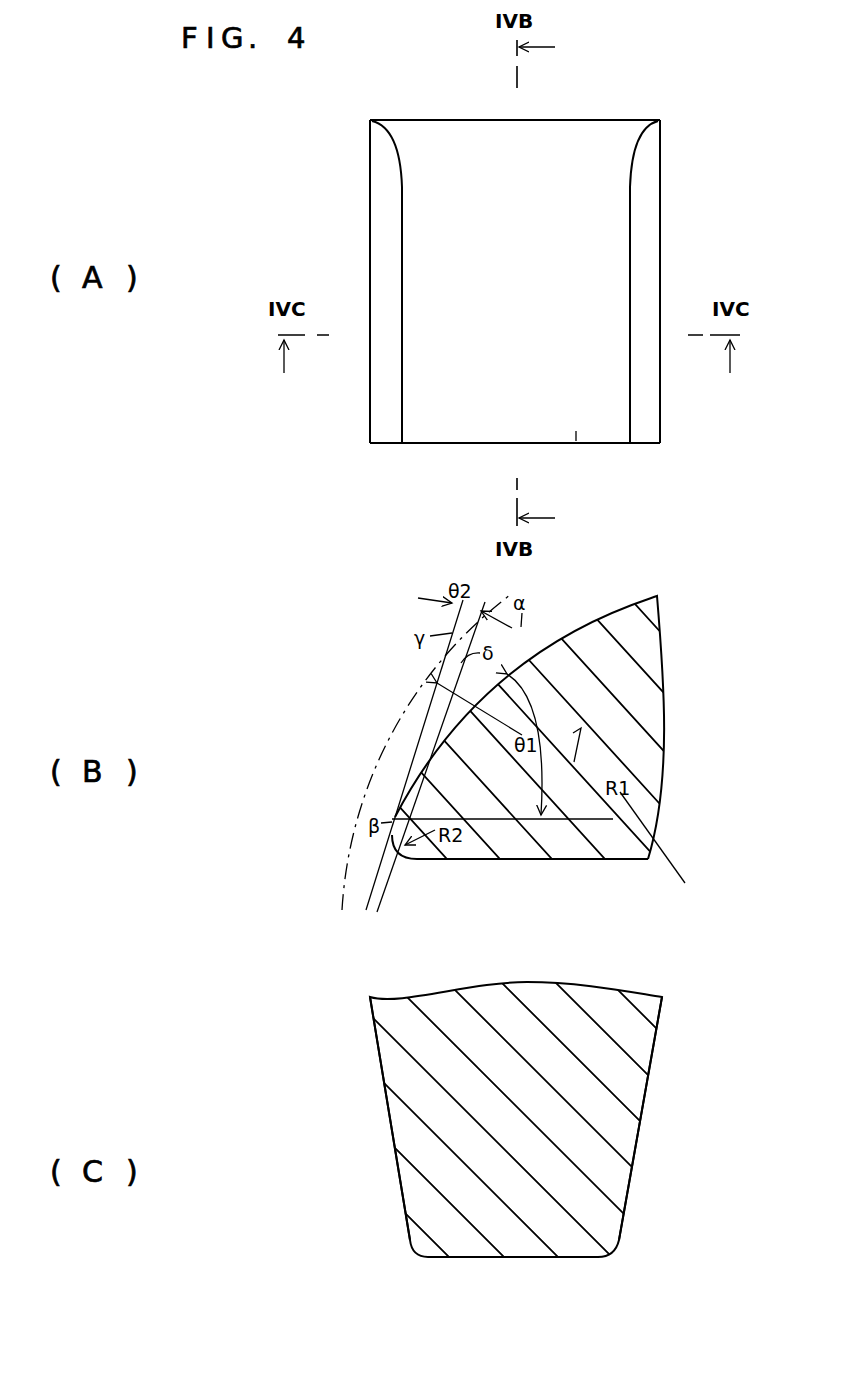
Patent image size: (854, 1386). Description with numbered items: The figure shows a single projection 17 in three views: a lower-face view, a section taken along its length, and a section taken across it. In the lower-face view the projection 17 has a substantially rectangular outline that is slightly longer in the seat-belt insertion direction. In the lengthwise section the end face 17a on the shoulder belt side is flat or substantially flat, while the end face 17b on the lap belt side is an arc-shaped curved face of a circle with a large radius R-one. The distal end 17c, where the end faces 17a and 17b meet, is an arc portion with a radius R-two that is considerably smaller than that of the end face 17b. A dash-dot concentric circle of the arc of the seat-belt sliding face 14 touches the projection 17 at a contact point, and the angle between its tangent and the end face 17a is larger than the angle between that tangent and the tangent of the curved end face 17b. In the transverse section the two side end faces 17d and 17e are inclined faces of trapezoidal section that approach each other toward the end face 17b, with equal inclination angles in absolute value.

The projection 17 is at (344, 403).
The end face on the shoulder belt side 17a is at (454, 445).
The end face on the lap belt side 17b is at (617, 136).
The distal end 17c is at (576, 433).
The side end face 17d is at (384, 220).
The side end face 17e is at (650, 189).
The seat-belt sliding face 14 is at (372, 745).